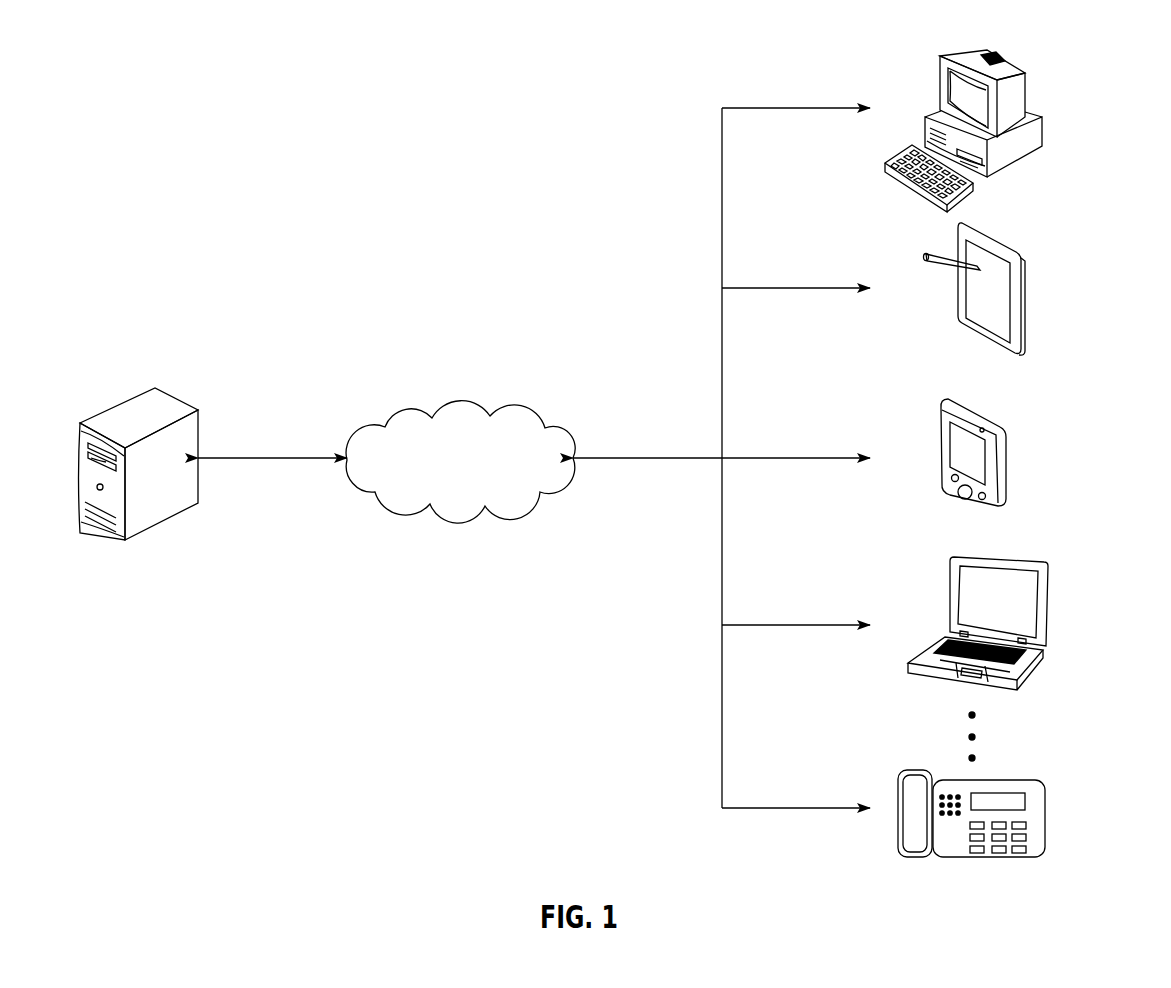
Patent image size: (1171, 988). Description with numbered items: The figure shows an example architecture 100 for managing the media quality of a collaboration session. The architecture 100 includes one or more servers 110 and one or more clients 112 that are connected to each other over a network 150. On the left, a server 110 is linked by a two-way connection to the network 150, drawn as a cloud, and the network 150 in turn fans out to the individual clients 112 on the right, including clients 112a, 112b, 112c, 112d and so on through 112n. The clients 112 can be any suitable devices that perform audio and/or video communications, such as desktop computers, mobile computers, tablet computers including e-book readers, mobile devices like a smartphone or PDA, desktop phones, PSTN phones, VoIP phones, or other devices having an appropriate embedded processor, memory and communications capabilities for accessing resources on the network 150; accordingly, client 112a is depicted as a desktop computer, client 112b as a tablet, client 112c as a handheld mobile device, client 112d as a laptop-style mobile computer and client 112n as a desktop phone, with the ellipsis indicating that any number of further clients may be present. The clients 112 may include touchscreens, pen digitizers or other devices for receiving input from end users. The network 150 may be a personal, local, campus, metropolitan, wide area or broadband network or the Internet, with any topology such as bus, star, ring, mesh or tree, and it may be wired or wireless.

The architecture 100 is at (180, 170).
The server 110 is at (170, 395).
The network 150 is at (462, 412).
The clients 112 is at (937, 44).
The client 112a is at (1027, 92).
The client 112b is at (1022, 302).
The client 112c is at (1007, 462).
The client 112d is at (1047, 595).
The client 112n is at (1047, 820).